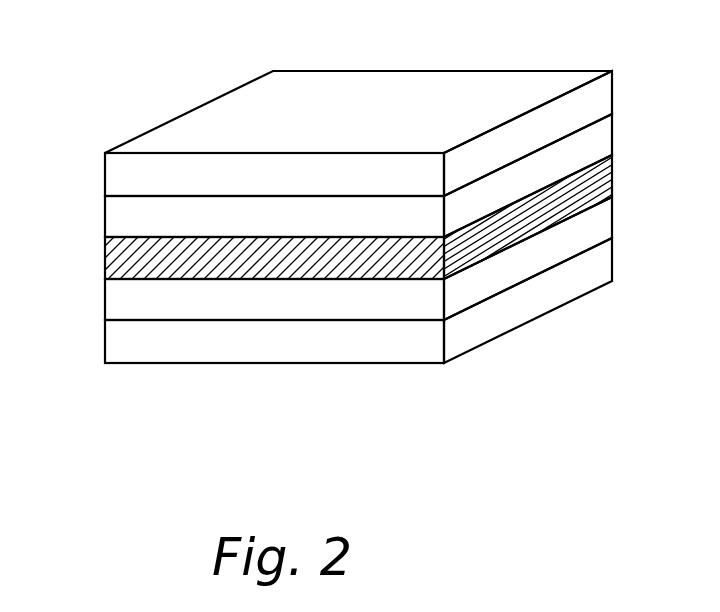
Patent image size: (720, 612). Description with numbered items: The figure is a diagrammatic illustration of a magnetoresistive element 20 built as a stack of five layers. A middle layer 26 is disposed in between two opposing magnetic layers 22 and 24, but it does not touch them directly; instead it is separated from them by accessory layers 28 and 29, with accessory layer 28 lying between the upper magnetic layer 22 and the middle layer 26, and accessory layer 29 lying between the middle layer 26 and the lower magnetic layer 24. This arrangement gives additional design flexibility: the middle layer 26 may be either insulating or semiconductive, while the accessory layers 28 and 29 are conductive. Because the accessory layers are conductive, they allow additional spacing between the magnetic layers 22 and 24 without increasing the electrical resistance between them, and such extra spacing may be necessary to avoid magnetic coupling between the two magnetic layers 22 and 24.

The magnetoresistive element 20 is at (390, 192).
The magnetic layer 22 is at (597, 105).
The accessory layer 28 is at (600, 145).
The middle layer 26 is at (613, 178).
The accessory layer 29 is at (598, 228).
The magnetic layer 24 is at (592, 272).